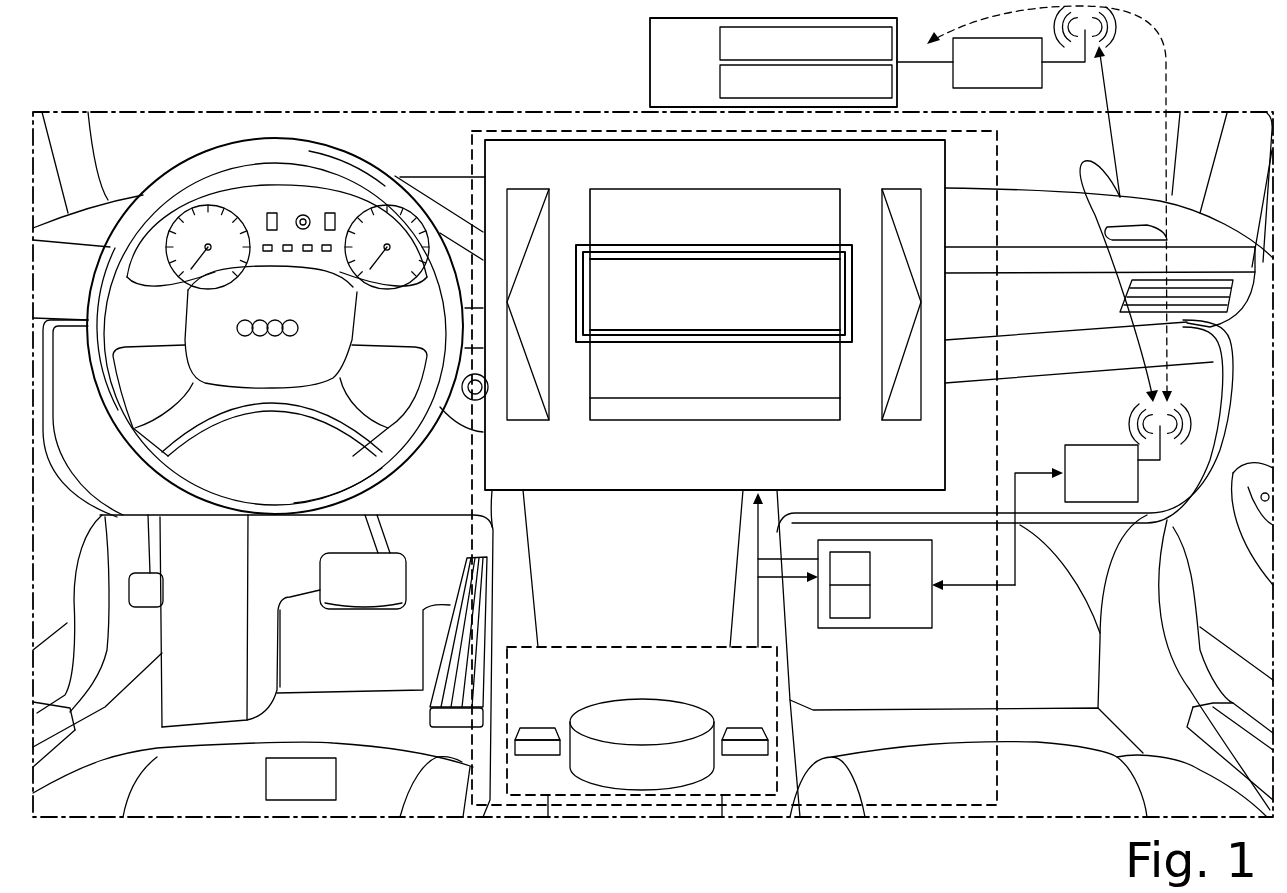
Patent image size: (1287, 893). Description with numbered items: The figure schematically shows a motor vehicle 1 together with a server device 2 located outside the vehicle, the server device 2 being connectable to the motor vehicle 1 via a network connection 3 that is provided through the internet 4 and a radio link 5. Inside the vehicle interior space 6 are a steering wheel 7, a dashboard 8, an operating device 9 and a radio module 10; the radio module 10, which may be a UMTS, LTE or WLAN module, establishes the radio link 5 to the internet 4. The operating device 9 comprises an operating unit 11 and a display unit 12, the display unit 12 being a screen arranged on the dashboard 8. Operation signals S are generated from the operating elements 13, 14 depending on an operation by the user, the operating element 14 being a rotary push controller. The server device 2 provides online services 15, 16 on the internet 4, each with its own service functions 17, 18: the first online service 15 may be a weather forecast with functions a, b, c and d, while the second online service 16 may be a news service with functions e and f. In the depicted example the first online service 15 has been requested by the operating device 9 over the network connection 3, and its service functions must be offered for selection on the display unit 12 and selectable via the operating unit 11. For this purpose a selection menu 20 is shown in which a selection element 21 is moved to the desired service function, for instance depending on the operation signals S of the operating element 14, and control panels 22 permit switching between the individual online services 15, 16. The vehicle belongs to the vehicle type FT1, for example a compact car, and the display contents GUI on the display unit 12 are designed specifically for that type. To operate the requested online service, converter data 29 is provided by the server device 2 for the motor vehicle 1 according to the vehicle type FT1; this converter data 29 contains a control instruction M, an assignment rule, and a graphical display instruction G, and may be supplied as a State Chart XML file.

The motor vehicle 1 is at (220, 112).
The server device 2 is at (650, 55).
The network connection 3 is at (1148, 30).
The internet 4 is at (1042, 78).
The radio link 5 is at (1112, 141).
The vehicle interior space 6 is at (132, 128).
The steering wheel 7 is at (177, 190).
The dashboard 8 is at (455, 196).
The operating device 9 is at (997, 302).
The radio module 10 is at (1078, 445).
The operating unit 11 is at (520, 647).
The display unit 12 is at (585, 490).
The operating elements 13 is at (543, 728).
The rotary push controller 14 is at (598, 700).
The online service 15 is at (720, 41).
The online service 16 is at (720, 77).
The service functions 17 is at (900, 31).
The service functions 18 is at (892, 88).
The selection menu 20 is at (630, 420).
The selection element 21 is at (583, 246).
The control panels 22 is at (530, 420).
The converter data 29 is at (865, 628).
The operation signals S is at (758, 606).
The display contents GUI is at (698, 470).
The vehicle type FT1 is at (301, 779).